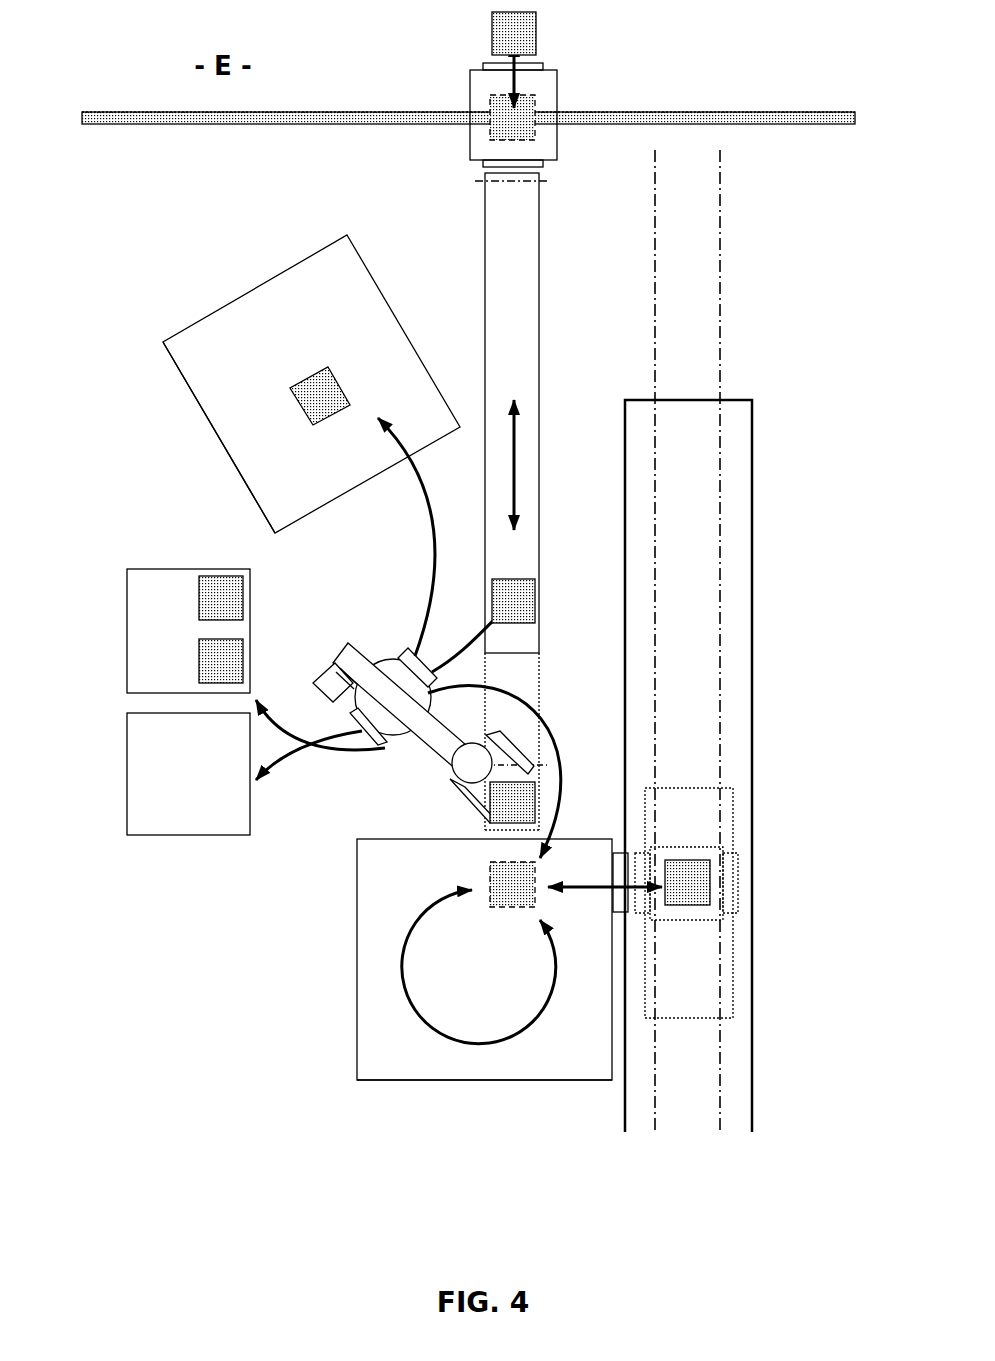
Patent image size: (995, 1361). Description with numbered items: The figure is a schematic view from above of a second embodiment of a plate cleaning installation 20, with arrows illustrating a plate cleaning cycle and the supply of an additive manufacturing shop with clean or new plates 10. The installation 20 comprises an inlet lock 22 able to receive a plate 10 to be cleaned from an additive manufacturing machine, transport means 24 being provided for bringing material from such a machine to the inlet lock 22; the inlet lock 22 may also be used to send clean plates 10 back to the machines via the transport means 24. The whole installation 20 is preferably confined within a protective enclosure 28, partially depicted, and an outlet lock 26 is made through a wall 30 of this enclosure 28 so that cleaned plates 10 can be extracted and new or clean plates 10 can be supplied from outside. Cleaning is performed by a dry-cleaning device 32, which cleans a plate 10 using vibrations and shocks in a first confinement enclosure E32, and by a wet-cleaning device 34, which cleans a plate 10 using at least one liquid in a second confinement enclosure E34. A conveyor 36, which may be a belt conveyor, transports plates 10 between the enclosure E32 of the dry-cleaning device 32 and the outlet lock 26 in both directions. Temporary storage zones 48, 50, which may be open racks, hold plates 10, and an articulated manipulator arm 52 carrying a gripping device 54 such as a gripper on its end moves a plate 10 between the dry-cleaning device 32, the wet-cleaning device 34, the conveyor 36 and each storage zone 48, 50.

The plate 10 is at (505, 34).
The installation 20 is at (261, 1149).
The inlet lock 22 is at (620, 853).
The transport means 24 is at (726, 819).
The outlet lock 26 is at (564, 91).
The protective enclosure 28 is at (703, 108).
The wall 30 is at (782, 114).
The dry-cleaning device 32 is at (414, 1084).
The first confinement enclosure E32 is at (498, 1081).
The wet-cleaning device 34 is at (203, 429).
The second confinement enclosure E34 is at (170, 360).
The conveyor 36 is at (542, 299).
The storage zone 48 is at (144, 620).
The storage zone 50 is at (144, 753).
The manipulator arm 52 is at (384, 654).
The gripping device 54 is at (446, 785).